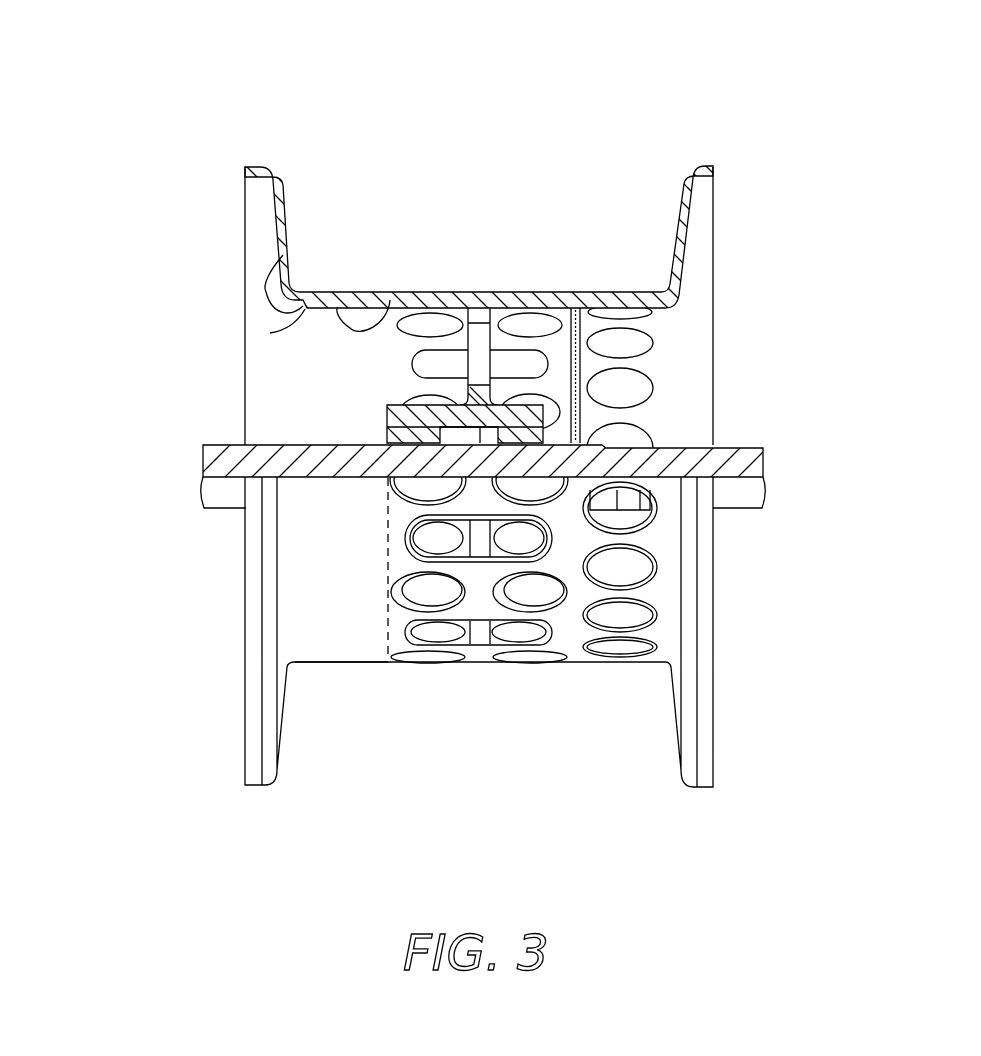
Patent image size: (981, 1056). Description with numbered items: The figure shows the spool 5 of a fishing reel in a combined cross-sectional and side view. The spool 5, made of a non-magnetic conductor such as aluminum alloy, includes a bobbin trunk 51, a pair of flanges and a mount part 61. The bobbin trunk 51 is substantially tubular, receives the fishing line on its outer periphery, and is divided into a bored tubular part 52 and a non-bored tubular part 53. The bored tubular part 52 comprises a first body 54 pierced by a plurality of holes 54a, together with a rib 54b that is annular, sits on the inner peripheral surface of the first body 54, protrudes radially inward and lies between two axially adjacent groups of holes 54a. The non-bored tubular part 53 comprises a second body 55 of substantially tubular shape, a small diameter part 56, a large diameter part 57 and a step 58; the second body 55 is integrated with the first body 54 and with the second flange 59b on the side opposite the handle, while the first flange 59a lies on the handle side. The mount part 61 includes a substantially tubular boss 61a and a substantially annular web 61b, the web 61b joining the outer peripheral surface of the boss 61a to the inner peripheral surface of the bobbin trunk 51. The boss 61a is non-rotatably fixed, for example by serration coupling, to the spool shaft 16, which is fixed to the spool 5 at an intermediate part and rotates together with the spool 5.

The spool 5 is at (760, 139).
The spool shaft 16 is at (756, 528).
The bobbin trunk 51 is at (476, 650).
The bored tubular part 52 is at (535, 681).
The non-bored tubular part 53 is at (357, 636).
The first body 54 is at (534, 300).
The holes 54a is at (622, 353).
The rib 54b is at (574, 308).
The second body 55 is at (348, 302).
The small diameter part 56 is at (390, 300).
The large diameter part 57 is at (283, 255).
The step 58 is at (270, 333).
The first flange 59a is at (687, 217).
The second flange 59b is at (277, 212).
The mount part 61 is at (299, 436).
The boss 61a is at (397, 418).
The web 61b is at (480, 360).